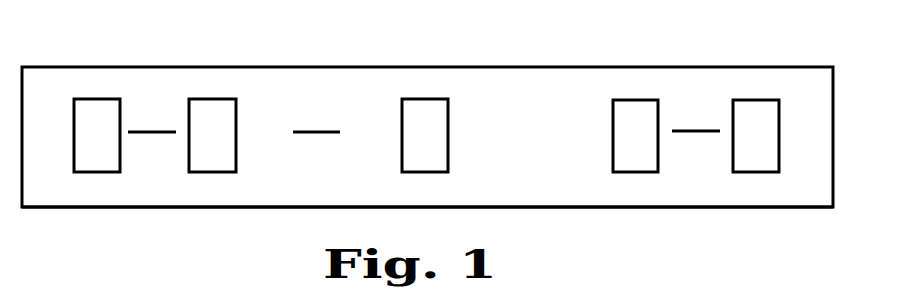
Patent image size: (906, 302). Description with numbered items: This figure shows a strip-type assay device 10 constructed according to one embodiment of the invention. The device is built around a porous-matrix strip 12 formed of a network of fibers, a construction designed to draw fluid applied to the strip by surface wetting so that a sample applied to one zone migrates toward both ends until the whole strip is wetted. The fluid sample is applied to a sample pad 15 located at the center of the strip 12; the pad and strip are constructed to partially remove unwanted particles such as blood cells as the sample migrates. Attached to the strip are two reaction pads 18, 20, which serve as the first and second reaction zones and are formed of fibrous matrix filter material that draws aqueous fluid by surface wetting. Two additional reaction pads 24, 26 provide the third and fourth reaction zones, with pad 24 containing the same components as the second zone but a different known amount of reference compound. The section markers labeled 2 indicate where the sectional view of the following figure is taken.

The assay device 10 is at (466, 40).
The porous-matrix strip 12 is at (628, 193).
The sample pad 15 is at (430, 118).
The reaction pad 18 is at (213, 112).
The reaction pad 20 is at (648, 108).
The reaction pad 24 is at (94, 105).
The reaction pad 26 is at (767, 118).
The section line of Fig. 2 is at (152, 150).